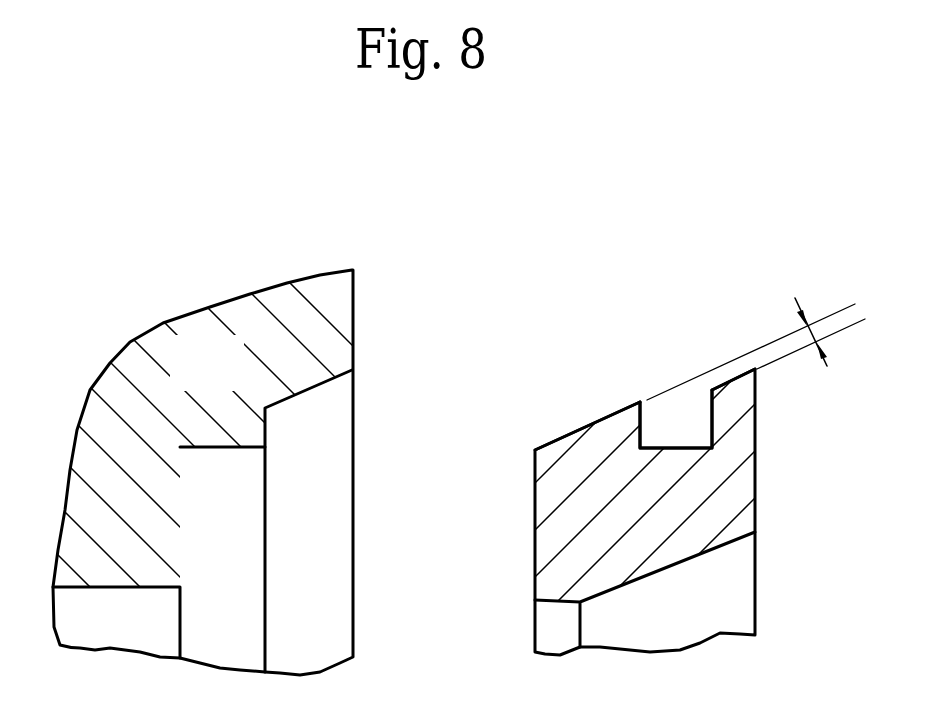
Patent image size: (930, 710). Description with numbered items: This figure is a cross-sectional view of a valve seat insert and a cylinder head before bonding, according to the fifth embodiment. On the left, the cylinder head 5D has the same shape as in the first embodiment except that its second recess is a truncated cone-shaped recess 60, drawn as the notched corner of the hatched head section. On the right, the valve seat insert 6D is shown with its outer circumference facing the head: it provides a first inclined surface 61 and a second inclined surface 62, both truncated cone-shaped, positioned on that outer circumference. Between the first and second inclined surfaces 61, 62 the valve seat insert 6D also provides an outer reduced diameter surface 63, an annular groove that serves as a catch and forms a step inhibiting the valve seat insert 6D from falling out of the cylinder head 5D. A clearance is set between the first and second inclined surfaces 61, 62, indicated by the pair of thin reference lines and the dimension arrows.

The cylinder head 5D is at (237, 385).
The valve seat insert 6D is at (698, 627).
The truncated cone-shaped recess 60 is at (312, 388).
The first inclined surface 61 is at (575, 428).
The second inclined surface 62 is at (739, 377).
The outer reduced diameter surface 63 is at (673, 445).